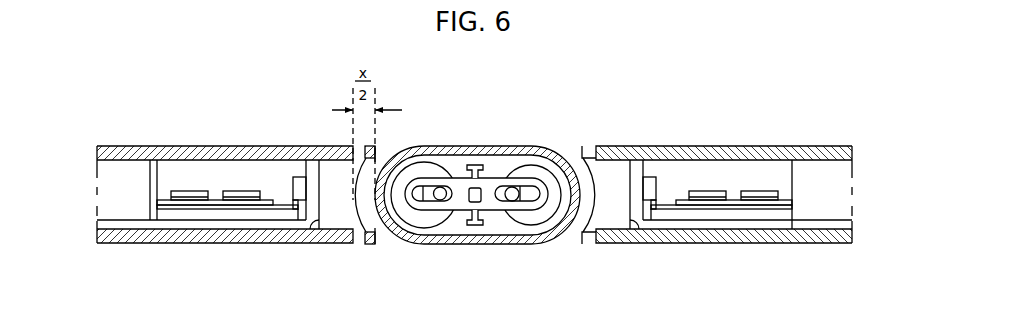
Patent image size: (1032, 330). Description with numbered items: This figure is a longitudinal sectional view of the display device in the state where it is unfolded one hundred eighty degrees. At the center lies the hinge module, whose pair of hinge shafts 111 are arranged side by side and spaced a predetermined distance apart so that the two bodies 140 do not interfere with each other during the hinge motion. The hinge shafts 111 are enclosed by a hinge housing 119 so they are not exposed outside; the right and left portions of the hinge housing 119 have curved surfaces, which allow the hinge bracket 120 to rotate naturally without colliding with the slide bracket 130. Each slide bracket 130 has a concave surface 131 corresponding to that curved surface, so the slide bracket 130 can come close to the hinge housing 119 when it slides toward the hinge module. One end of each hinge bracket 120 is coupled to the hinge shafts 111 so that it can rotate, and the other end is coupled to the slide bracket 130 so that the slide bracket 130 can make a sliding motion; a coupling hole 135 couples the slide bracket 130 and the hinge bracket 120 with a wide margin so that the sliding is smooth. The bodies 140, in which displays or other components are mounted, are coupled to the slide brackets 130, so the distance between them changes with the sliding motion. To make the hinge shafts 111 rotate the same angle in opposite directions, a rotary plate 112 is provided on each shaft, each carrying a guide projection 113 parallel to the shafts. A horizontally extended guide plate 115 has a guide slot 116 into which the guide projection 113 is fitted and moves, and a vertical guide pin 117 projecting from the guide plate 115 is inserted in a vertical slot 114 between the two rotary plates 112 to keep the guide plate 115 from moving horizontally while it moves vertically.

The hinge shaft 111 is at (540, 187).
The rotary plate 112 is at (532, 174).
The guide projection 113 is at (521, 195).
The vertical slot 114 is at (472, 163).
The guide plate 115 is at (462, 211).
The guide slot 116 is at (502, 196).
The lower pin 117 is at (474, 226).
The hinge housing 119 is at (406, 147).
The hinge bracket 120 is at (587, 207).
The slide bracket 130 is at (782, 183).
The concave surface 131 is at (365, 212).
The coupling hole 135 is at (190, 194).
The body 140 is at (135, 153).